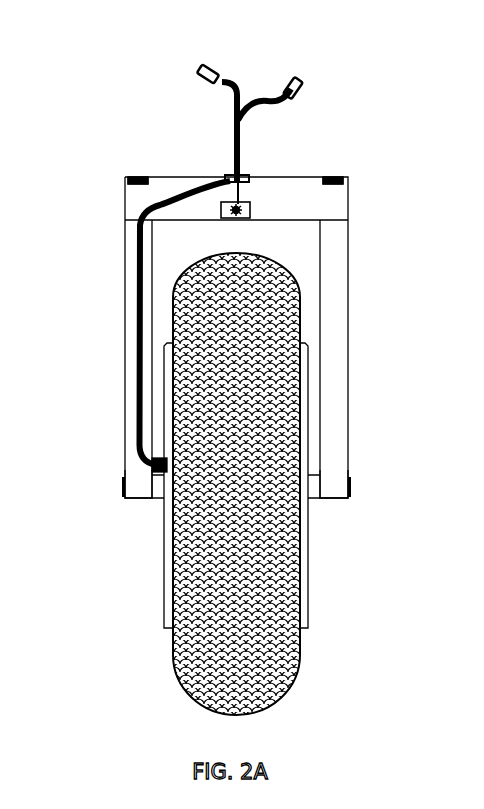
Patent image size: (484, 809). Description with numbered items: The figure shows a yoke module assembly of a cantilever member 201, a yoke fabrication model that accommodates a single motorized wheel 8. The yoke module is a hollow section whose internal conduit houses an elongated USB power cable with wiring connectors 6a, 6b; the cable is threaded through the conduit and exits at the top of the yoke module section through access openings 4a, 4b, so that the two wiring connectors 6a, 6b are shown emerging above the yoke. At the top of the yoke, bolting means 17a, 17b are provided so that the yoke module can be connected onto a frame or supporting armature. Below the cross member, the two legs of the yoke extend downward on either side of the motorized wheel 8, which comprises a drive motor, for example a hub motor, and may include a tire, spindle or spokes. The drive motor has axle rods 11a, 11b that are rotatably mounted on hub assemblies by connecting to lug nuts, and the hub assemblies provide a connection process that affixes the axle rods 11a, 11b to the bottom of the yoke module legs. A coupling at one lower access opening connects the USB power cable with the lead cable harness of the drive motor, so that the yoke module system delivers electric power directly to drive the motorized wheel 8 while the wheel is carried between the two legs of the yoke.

The yoke module assembly of a cantilever member 201 is at (112, 58).
The access opening 4a is at (125, 176).
The bolting means 17a is at (138, 180).
The access opening 4b is at (385, 157).
The bolting means 17b is at (333, 180).
The wiring connector 6a is at (222, 84).
The wiring connector 6b is at (303, 103).
The axle rod 11a is at (164, 500).
The axle rod 11b is at (309, 500).
The motorized wheel 8 is at (300, 672).